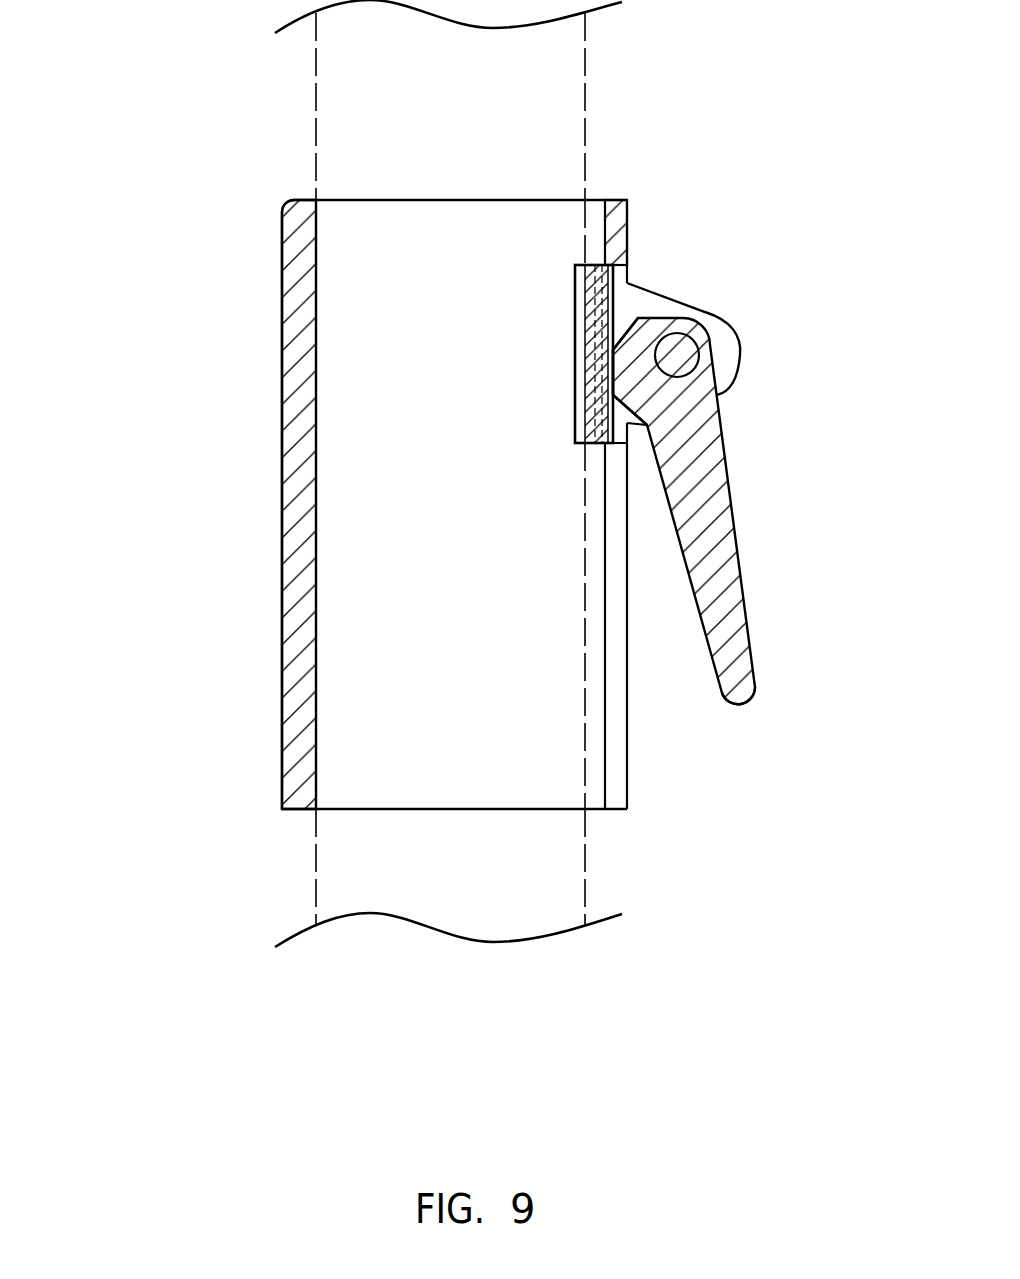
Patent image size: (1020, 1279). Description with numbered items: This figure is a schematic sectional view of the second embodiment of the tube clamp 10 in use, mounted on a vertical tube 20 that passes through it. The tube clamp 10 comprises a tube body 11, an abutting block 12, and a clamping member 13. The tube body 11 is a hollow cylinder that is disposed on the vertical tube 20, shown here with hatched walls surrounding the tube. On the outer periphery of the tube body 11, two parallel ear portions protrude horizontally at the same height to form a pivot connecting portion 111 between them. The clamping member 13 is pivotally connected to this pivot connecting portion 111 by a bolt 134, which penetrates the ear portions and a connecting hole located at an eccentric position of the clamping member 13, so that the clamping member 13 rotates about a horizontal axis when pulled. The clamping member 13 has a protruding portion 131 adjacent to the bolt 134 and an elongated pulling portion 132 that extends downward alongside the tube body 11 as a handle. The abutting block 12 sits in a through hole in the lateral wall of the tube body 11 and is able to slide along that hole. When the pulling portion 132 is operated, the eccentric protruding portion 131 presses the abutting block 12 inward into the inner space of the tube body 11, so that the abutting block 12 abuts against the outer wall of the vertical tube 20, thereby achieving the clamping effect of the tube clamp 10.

The tube clamp 10 is at (268, 230).
The tube body 11 is at (310, 343).
The abutting block 12 is at (577, 265).
The clamping member 13 is at (703, 502).
The vertical tube 20 is at (353, 80).
The pivot connecting portion 111 is at (667, 312).
The protruding portion 131 is at (620, 348).
The pulling portion 132 is at (741, 640).
The bolt 134 is at (673, 357).